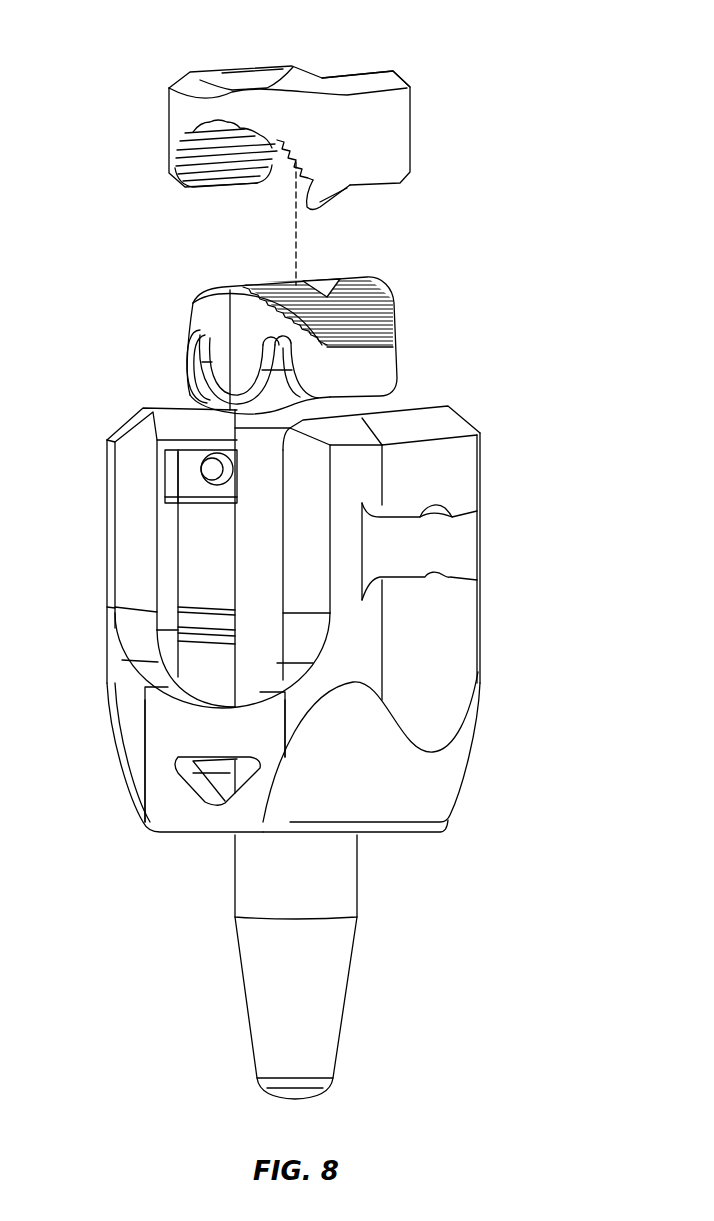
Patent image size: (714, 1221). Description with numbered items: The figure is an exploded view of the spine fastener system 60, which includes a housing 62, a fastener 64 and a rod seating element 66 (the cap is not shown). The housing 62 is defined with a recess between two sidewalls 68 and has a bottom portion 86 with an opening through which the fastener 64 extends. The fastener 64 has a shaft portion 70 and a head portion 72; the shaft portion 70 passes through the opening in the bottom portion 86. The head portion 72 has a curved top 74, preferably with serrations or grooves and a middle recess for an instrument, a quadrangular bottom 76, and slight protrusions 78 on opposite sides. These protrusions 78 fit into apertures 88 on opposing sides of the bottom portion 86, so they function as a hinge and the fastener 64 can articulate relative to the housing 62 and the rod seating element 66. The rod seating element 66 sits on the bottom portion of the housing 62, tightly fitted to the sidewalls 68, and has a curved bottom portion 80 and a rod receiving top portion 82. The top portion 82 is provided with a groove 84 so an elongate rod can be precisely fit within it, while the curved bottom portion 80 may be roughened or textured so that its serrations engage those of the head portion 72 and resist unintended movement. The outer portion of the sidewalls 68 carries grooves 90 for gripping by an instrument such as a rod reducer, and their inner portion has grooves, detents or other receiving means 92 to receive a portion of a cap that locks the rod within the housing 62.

The fastener system 60 is at (523, 383).
The housing 62 is at (482, 658).
The fastener 64 is at (318, 903).
The rod seating element 66 is at (182, 118).
The sidewalls 68 is at (107, 578).
The shaft portion 70 is at (347, 995).
The head portion 72 is at (373, 372).
The curved top 74 is at (192, 338).
The quadrangular bottom 76 is at (197, 402).
The protrusions 78 is at (240, 373).
The curved bottom portion 80 is at (213, 165).
The rod receiving top portion 82 is at (405, 87).
The groove 84 is at (180, 80).
The bottom portion 86 is at (203, 818).
The apertures 88 is at (230, 775).
The grooves 90 is at (433, 545).
The receiving means 92 is at (177, 473).